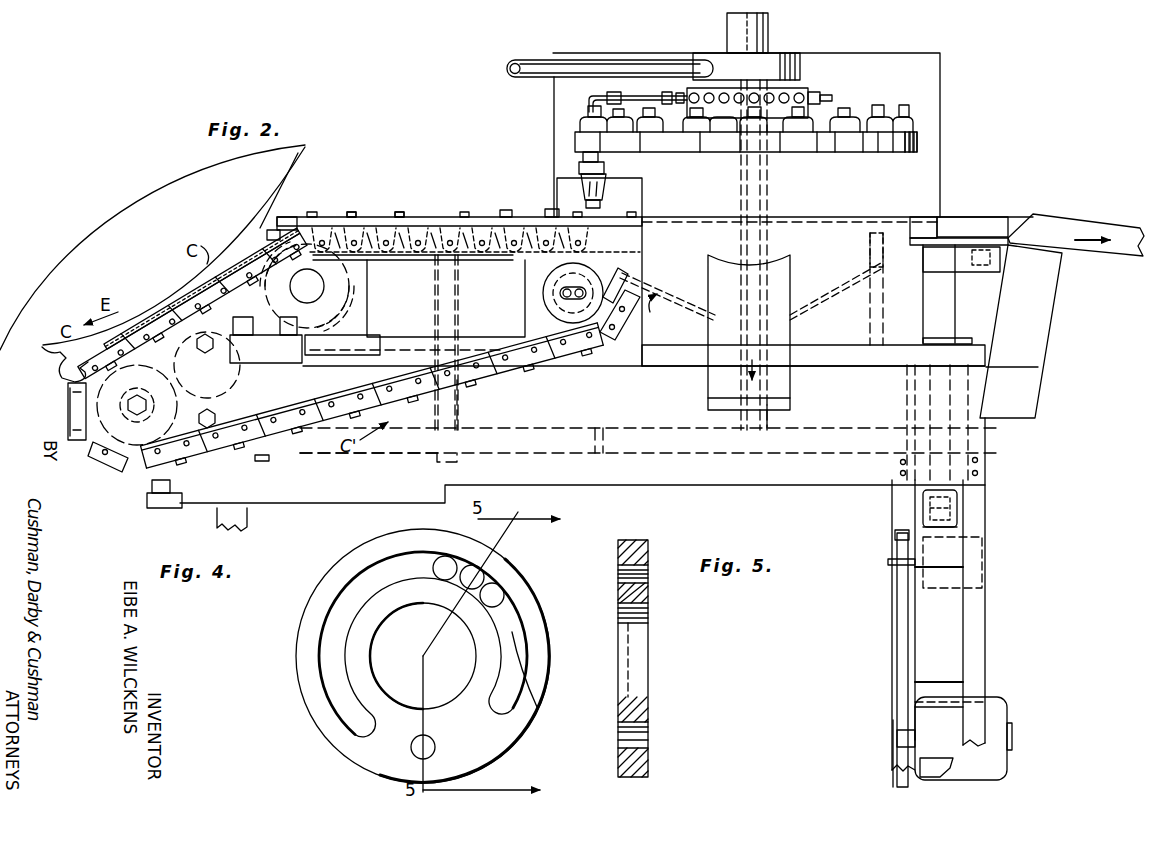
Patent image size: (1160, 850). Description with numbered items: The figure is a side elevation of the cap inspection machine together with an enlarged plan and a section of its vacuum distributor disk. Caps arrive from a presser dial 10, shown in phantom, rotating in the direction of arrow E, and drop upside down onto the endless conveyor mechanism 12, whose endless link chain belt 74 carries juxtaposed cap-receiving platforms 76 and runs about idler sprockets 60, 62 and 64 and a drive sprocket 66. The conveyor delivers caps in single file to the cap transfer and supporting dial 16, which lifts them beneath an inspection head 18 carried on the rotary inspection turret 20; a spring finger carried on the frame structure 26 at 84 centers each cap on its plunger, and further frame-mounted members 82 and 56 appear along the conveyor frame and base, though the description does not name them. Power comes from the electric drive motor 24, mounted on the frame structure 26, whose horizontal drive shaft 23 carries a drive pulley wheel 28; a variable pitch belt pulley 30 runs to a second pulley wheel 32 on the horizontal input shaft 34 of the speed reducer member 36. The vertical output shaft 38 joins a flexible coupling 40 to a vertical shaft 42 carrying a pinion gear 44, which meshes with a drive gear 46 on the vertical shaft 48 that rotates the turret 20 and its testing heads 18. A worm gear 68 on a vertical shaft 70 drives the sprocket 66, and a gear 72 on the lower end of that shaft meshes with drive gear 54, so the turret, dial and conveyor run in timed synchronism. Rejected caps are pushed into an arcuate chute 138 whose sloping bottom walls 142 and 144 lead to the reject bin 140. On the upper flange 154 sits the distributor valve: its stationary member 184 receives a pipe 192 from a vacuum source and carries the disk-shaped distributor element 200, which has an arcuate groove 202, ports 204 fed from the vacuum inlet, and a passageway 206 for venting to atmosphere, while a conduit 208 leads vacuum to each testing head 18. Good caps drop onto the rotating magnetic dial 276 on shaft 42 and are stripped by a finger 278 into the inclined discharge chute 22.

In FIG. 2, the presser dial 10 is at (82, 245).
In FIG. 2, the endless conveyor mechanism 12 is at (163, 296).
In FIG. 2, the cap transfer and supporting dial 16 is at (468, 212).
In FIG. 2, the inspection head 18 is at (608, 182).
In FIG. 2, the rotary inspection structure or turret 20 is at (930, 132).
In FIG. 2, the discharge chute 22 is at (1068, 215).
In FIG. 2, the horizontal drive shaft 23 is at (893, 725).
In FIG. 2, the electric drive motor 24 is at (1007, 700).
In FIG. 2, the frame structure 26 is at (990, 617).
In FIG. 2, the drive pulley wheel 28 is at (897, 705).
In FIG. 2, the variable pitch belt pulley 30 is at (897, 638).
In FIG. 2, the second pulley wheel 32 is at (895, 540).
In FIG. 2, the horizontal input shaft 34 is at (888, 563).
In FIG. 2, the speed reducer member 36 is at (984, 550).
In FIG. 2, the output shaft 38 is at (965, 517).
In FIG. 2, the flexible coupling 40 is at (968, 497).
In FIG. 2, the vertical shaft 42 is at (982, 456).
In FIG. 2, the pinion gear 44 is at (978, 436).
In FIG. 2, the drive gear 46 is at (654, 420).
In FIG. 2, the vertical shaft 48 is at (770, 420).
In FIG. 2, the drive gear 54 is at (362, 458).
In FIG. 2, the hanger rod 56 is at (460, 400).
In FIG. 2, the idler sprocket 60 is at (350, 290).
In FIG. 2, the idler sprocket 62 is at (137, 394).
In FIG. 2, the idler sprocket 64 is at (548, 275).
In FIG. 2, the drive sprocket 66 is at (215, 385).
In FIG. 2, the worm gear 68 is at (287, 390).
In FIG. 2, the vertical shaft 70 is at (266, 345).
In FIG. 2, the gear 72 is at (262, 461).
In FIG. 2, the endless link chain belt 74 is at (47, 350).
In FIG. 2, the cap-receiving platforms 76 is at (88, 442).
In FIG. 2, the stud 82 is at (397, 212).
In FIG. 2, the spring finger mounting 84 is at (356, 212).
In FIG. 2, the chute 138 is at (667, 312).
In FIG. 2, the reject bin 140 is at (793, 382).
In FIG. 2, the bottom wall 142 is at (700, 320).
In FIG. 2, the bottom wall 144 is at (830, 298).
In FIG. 2, the upper flange 154 is at (925, 151).
In FIG. 2, the stationary member 184 is at (800, 63).
In FIG. 2, the pipe 192 is at (535, 60).
In FIG. 4, the disk-shaped distributor element 200 is at (525, 578).
In FIG. 5, the disk-shaped distributor element 200 is at (648, 590).
In FIG. 4, the arcuate groove 202 is at (523, 645).
In FIG. 5, the arcuate groove 202 is at (648, 652).
In FIG. 4, the passageways or ports 204 is at (480, 570).
In FIG. 5, the passageways or ports 204 is at (617, 565).
In FIG. 4, the passageway 206 is at (433, 746).
In FIG. 5, the passageway 206 is at (643, 732).
In FIG. 2, the conduit 208 is at (652, 92).
In FIG. 2, the rotating magnetic dial 276 is at (993, 237).
In FIG. 2, the finger 278 is at (953, 217).